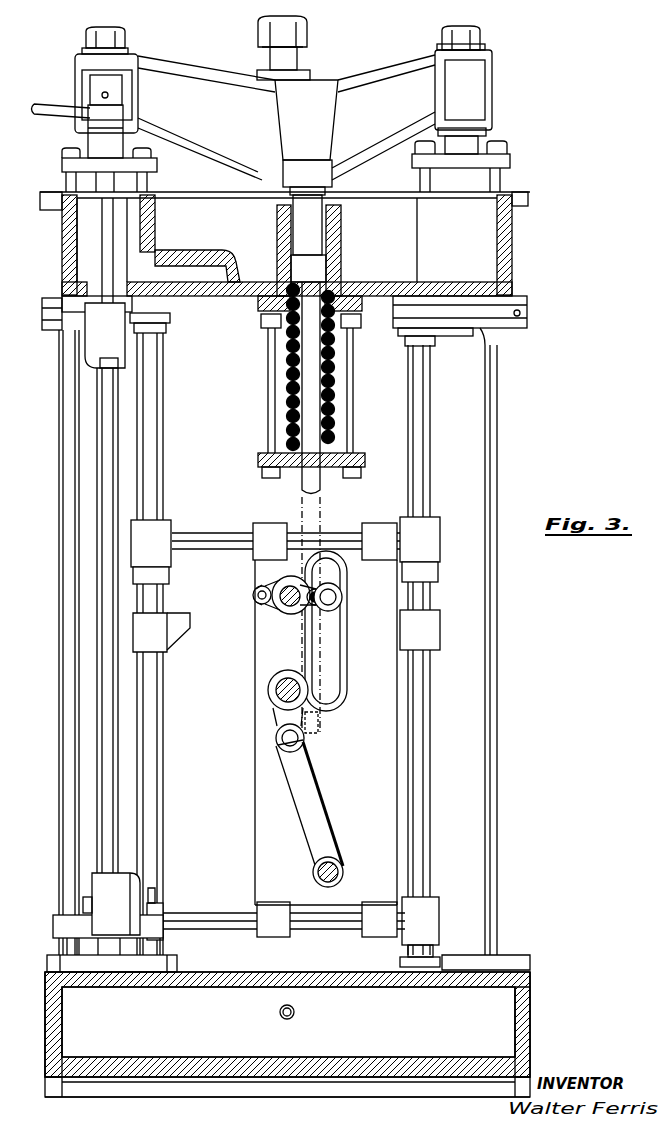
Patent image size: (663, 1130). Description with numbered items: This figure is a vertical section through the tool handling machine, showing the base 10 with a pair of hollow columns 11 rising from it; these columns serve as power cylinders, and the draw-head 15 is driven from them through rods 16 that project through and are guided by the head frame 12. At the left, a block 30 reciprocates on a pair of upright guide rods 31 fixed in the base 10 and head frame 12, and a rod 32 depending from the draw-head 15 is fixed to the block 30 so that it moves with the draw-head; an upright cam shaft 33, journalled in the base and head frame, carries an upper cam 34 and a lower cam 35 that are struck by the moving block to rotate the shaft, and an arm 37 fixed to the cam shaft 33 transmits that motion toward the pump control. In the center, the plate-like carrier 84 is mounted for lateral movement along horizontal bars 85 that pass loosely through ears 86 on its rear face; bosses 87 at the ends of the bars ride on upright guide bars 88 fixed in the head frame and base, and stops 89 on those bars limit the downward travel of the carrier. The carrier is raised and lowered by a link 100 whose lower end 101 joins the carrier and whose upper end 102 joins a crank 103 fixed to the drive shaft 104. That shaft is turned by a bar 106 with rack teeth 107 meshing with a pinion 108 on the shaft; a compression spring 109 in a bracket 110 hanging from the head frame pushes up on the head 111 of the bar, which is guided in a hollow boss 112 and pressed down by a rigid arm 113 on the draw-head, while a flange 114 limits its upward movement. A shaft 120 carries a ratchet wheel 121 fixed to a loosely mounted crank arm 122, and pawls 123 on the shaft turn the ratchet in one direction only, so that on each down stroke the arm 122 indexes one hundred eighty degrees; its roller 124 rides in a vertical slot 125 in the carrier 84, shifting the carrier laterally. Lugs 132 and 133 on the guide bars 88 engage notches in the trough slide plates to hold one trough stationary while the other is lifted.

The base 10 is at (323, 1065).
The columns 11 is at (80, 622).
The head frame 12 is at (483, 238).
The draw-head 15 is at (355, 155).
The rods 16 is at (477, 137).
The block 30 is at (56, 925).
The guide rods 31 is at (65, 877).
The rod 32 is at (100, 835).
The cam shaft 33 is at (108, 782).
The upper cam 34 is at (100, 355).
The lower cam 35 is at (107, 917).
The arm 37 is at (57, 97).
The carrier 84 is at (255, 710).
The horizontal bars 85 is at (216, 531).
The ears 86 is at (285, 522).
The bosses 87 is at (170, 553).
The upright guide bars 88 is at (157, 400).
The stops 89 is at (170, 572).
The link 100 is at (302, 797).
The lower end of link 101 is at (320, 862).
The upper end of link 102 is at (285, 752).
The crank 103 is at (280, 736).
The drive shaft 104 is at (293, 680).
The bar 106 is at (307, 413).
The rack teeth 107 is at (307, 720).
The pinion 108 is at (271, 702).
The compression spring 109 is at (334, 355).
The bracket 110 is at (372, 452).
The head 111 is at (313, 217).
The hollow boss 112 is at (338, 246).
The rigid arm 113 is at (320, 136).
The flange 114 is at (318, 268).
The shaft 120 is at (290, 606).
The ratchet wheel 121 is at (280, 607).
The crank arm 122 is at (315, 589).
The pawls 123 is at (262, 590).
The roller 124 is at (336, 588).
The vertical slot 125 is at (322, 642).
The lug 132 is at (397, 641).
The lug 133 is at (177, 633).